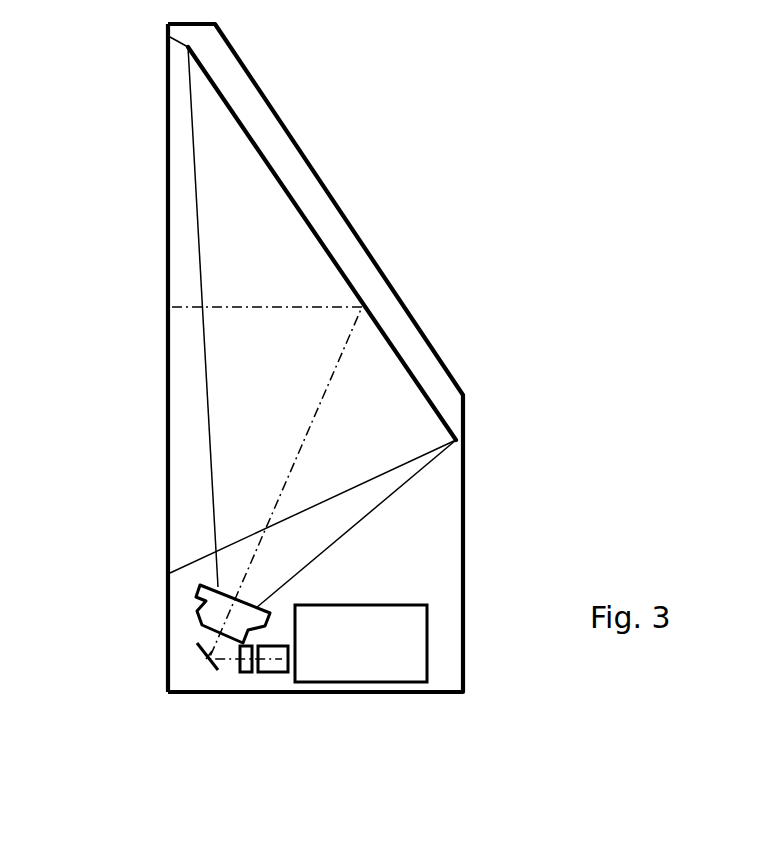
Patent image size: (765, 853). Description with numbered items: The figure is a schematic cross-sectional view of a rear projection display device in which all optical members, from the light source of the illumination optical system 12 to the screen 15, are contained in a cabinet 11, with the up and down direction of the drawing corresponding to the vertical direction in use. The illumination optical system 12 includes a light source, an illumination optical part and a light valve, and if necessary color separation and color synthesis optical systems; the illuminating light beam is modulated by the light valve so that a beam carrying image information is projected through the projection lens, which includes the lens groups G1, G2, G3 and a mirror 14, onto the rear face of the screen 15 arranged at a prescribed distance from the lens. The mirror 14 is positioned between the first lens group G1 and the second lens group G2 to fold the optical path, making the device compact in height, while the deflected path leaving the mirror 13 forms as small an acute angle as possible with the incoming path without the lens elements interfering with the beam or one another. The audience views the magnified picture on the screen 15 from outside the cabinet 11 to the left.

The cabinet 11 is at (463, 505).
The illumination optical system 12 is at (387, 672).
The mirror 13 is at (338, 257).
The mirror 14 is at (198, 646).
The screen 15 is at (167, 232).
The first lens group G1 is at (200, 589).
The second lens group G2 is at (248, 672).
The third lens group G3 is at (278, 669).